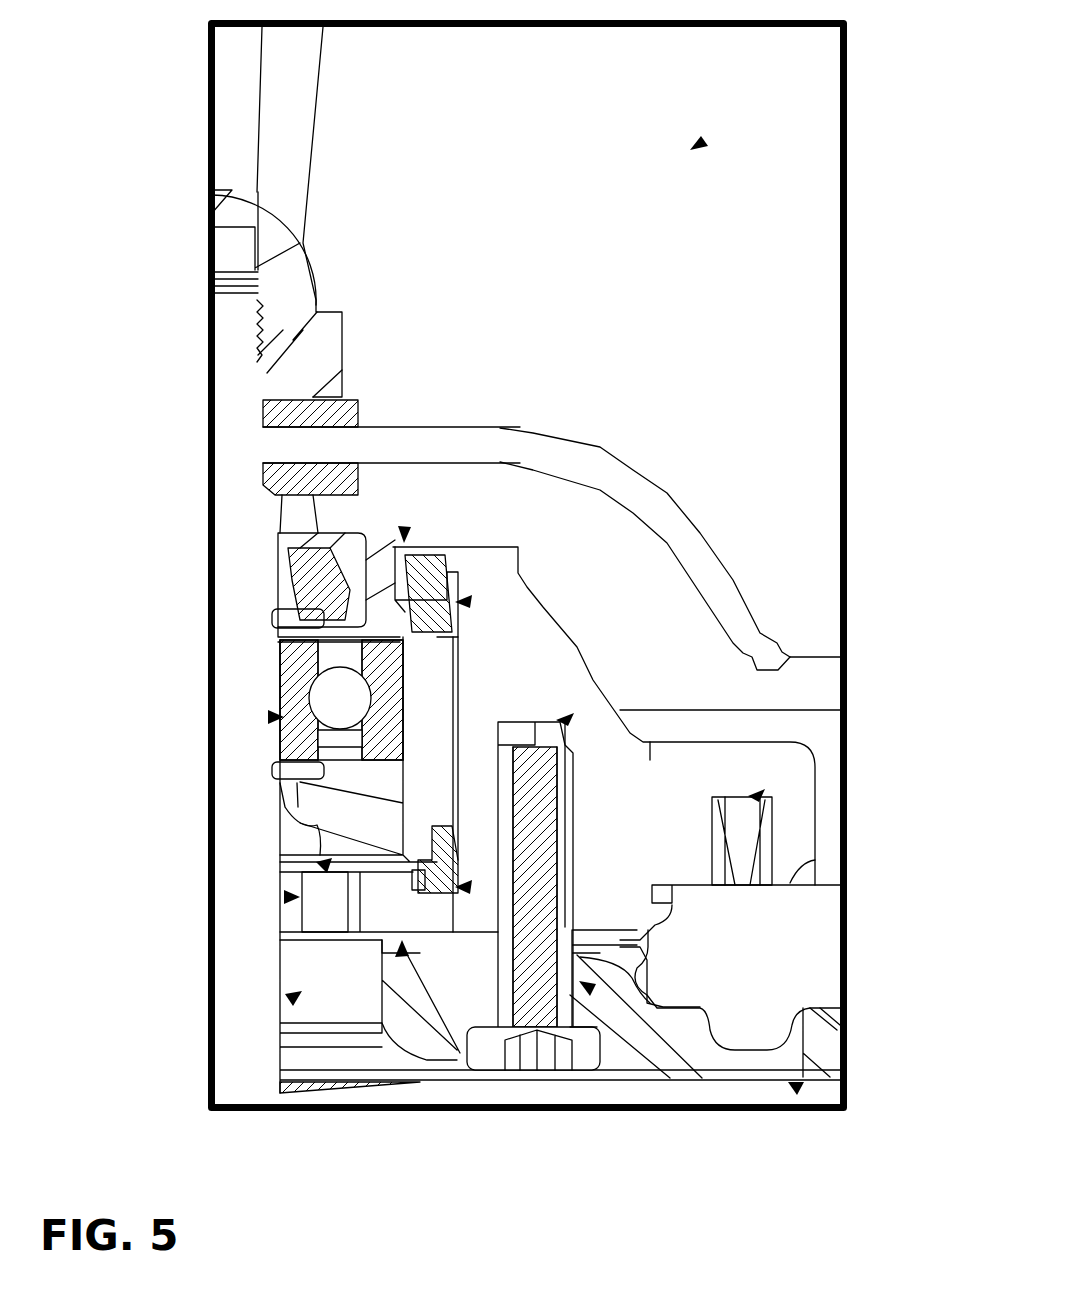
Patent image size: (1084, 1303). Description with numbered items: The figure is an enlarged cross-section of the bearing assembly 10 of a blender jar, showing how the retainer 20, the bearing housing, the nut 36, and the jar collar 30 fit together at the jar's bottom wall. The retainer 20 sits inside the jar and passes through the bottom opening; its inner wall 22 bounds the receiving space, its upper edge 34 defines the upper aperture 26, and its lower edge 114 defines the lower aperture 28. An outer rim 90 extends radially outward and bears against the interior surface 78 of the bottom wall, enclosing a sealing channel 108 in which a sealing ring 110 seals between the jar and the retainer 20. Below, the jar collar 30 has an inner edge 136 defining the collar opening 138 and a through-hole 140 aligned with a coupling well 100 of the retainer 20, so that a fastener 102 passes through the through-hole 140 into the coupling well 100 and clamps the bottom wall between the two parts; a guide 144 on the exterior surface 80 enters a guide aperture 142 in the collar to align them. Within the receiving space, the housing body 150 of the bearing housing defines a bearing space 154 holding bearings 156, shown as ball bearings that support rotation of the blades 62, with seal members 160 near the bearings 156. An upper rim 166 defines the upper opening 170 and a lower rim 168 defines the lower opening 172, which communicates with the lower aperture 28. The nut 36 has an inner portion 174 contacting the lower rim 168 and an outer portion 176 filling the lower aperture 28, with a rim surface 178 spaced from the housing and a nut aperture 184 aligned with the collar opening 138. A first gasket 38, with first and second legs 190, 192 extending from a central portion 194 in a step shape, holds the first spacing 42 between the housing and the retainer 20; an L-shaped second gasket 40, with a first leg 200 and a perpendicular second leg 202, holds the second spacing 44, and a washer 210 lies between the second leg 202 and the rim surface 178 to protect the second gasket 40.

The bearing assembly 10 is at (692, 148).
The retainer 20 is at (520, 640).
The inner wall 22 is at (455, 677).
The upper aperture 26 is at (405, 538).
The lower aperture 28 is at (402, 950).
The jar collar 30 is at (683, 1073).
The upper edge 34 is at (443, 552).
The nut 36 is at (370, 923).
The first gasket 38 is at (463, 587).
The second gasket 40 is at (445, 833).
The first spacing 42 is at (462, 602).
The second spacing 44 is at (462, 887).
The blades 62 is at (603, 457).
The interior surface 78 is at (795, 880).
The exterior surface 80 is at (828, 1012).
The outer rim 90 is at (790, 832).
The coupling well 100 is at (560, 718).
The fastener 102 is at (537, 1000).
The sealing channel 108 is at (753, 793).
The sealing ring 110 is at (733, 840).
The lower edge 114 is at (480, 910).
The inner edge 136 is at (428, 1040).
The collar opening 138 is at (298, 994).
The through-hole 140 is at (581, 988).
The guide aperture 142 is at (792, 1088).
The guide 144 is at (755, 1027).
The housing body 150 is at (423, 770).
The bearing space 154 is at (279, 717).
The bearings 156 is at (302, 687).
The seal members 160 is at (317, 572).
The upper rim 166 is at (348, 542).
The lower rim 168 is at (400, 832).
The upper opening 170 is at (287, 535).
The lower opening 172 is at (325, 863).
The inner portion 174 is at (395, 875).
The outer portion 176 is at (429, 920).
The rim surface 178 is at (443, 922).
The nut aperture 184 is at (296, 897).
The first leg 190 is at (305, 585).
The second leg 192 is at (463, 583).
The central portion 194 is at (407, 560).
The first leg 200 is at (438, 875).
The second leg 202 is at (410, 892).
The washer 210 is at (425, 912).